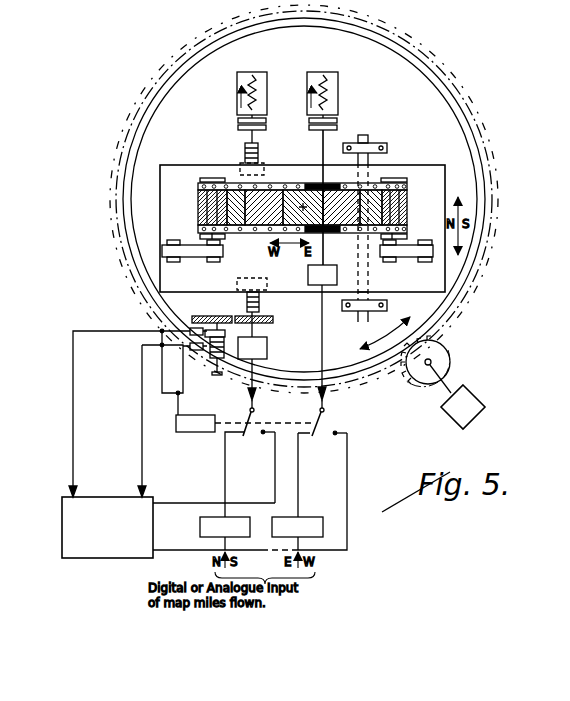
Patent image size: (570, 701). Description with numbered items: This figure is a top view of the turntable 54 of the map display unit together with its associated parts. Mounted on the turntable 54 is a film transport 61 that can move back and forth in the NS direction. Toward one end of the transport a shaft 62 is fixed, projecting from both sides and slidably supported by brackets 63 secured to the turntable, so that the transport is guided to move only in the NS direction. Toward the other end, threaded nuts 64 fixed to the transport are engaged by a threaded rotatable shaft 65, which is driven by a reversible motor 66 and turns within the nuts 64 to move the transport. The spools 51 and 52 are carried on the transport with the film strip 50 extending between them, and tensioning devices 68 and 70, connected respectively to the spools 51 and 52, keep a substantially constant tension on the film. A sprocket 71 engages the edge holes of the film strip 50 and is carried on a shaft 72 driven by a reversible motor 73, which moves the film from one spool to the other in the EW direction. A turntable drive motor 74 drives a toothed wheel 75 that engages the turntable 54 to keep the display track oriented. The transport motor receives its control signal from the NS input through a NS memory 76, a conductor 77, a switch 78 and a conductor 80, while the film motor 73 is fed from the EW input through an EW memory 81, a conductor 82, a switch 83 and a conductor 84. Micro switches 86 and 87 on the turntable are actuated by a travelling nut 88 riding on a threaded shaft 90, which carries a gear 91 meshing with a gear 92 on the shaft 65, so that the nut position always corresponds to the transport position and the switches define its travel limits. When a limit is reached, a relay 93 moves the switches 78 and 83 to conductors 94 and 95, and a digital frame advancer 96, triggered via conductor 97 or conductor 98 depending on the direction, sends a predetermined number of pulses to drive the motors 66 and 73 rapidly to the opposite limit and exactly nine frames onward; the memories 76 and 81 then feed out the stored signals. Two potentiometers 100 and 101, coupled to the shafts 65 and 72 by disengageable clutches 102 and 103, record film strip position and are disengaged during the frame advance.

The film strip 50 is at (287, 182).
The spool 51 is at (200, 203).
The spool 52 is at (405, 195).
The turntable 54 is at (124, 250).
The film transport 61 is at (167, 173).
The shaft 62 is at (370, 162).
The brackets 63 is at (362, 143).
The threaded nuts 64 is at (240, 162).
The threaded rotatable shaft 65 is at (245, 148).
The reversible motor 66 is at (267, 352).
The tensioning device 68 is at (200, 254).
The tensioning device 70 is at (410, 256).
The sprocket 71 is at (328, 234).
The shaft 72 is at (308, 268).
The reversible motor 73 is at (321, 300).
The turntable drive motor 74 is at (474, 400).
The toothed wheel 75 is at (444, 354).
The NS memory 76 is at (200, 526).
The conductor 77 is at (225, 470).
The switch 78 is at (250, 436).
The conductor 80 is at (258, 397).
The EW memory 81 is at (333, 500).
The conductor 82 is at (298, 482).
The switch 83 is at (328, 423).
The conductor 84 is at (371, 344).
The micro switch 86 is at (190, 331).
The micro switch 87 is at (208, 338).
The travelling nut 88 is at (222, 358).
The threaded shaft 90 is at (216, 366).
The gear 91 is at (214, 316).
The gear 92 is at (250, 312).
The relay 93 is at (200, 432).
The conductor 94 is at (275, 481).
The conductor 95 is at (349, 476).
The digital frame advancer 96 is at (62, 524).
The conductor 97 is at (73, 421).
The conductor 98 is at (142, 424).
The potentiometer 100 is at (252, 72).
The potentiometer 101 is at (323, 72).
The disengageable clutch 102 is at (238, 124).
The disengageable clutch 103 is at (338, 122).